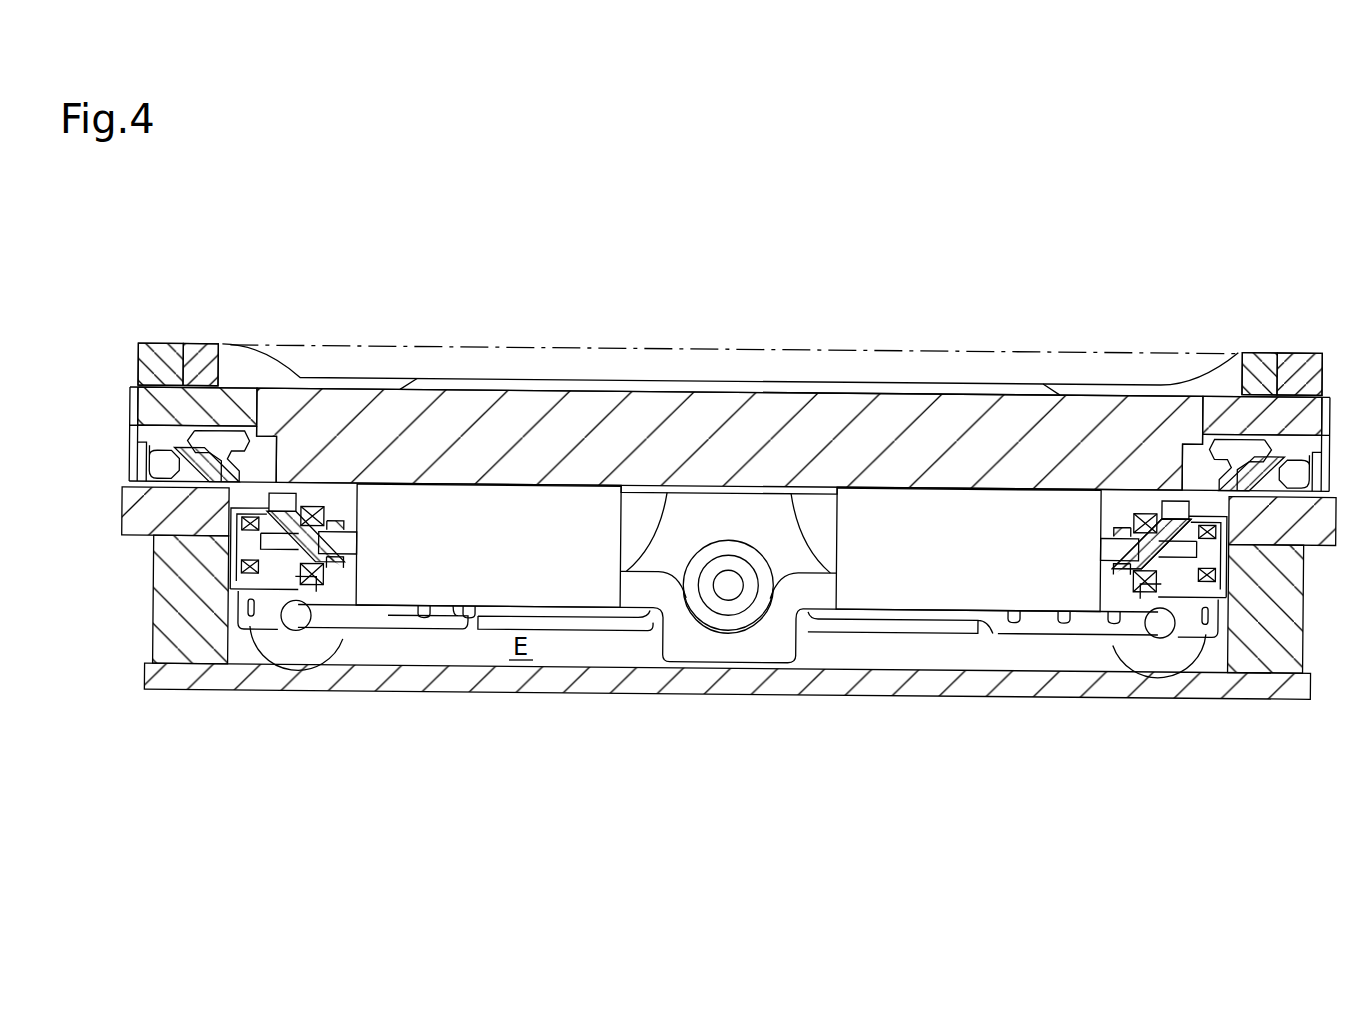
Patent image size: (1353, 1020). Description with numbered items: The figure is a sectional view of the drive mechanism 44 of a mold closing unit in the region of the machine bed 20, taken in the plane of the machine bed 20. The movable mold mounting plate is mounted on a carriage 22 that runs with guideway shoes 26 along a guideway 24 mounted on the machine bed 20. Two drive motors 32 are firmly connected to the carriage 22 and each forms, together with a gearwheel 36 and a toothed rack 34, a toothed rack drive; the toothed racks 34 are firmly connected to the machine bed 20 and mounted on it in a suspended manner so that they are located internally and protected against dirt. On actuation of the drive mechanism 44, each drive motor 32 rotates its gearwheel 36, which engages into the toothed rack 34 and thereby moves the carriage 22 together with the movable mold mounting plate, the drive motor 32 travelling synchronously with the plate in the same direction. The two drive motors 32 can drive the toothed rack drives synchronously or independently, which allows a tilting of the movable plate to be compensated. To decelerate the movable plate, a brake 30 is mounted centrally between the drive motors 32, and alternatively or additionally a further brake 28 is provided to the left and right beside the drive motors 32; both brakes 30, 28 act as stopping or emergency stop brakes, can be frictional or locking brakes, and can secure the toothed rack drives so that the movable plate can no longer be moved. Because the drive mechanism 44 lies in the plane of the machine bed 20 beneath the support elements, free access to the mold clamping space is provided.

The machine bed 20 is at (187, 653).
The carriage 22 is at (820, 437).
The guideway 24 is at (146, 437).
The guideway shoes 26 is at (183, 437).
The further brake 28 is at (292, 645).
The brake 30 is at (718, 566).
The drive motor 32 is at (960, 555).
The toothed rack 34 is at (1177, 513).
The gearwheel 36 is at (1187, 553).
The drive mechanism 44 is at (951, 660).